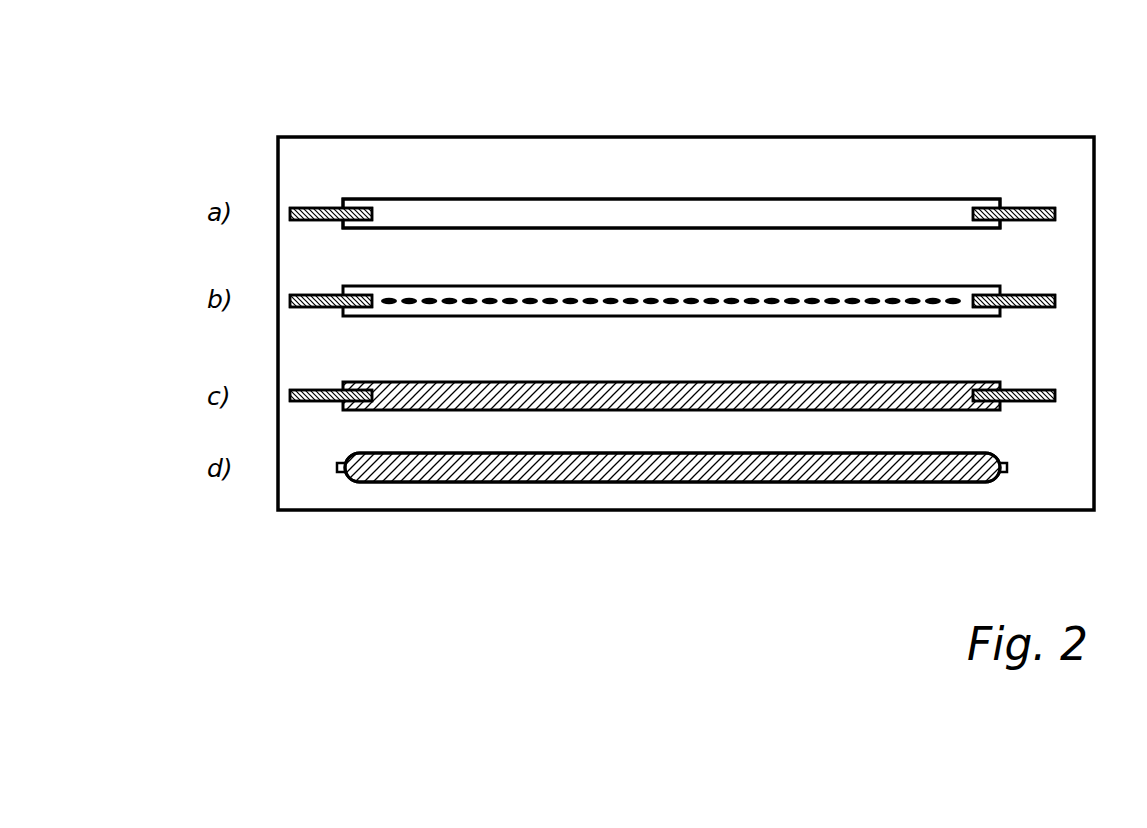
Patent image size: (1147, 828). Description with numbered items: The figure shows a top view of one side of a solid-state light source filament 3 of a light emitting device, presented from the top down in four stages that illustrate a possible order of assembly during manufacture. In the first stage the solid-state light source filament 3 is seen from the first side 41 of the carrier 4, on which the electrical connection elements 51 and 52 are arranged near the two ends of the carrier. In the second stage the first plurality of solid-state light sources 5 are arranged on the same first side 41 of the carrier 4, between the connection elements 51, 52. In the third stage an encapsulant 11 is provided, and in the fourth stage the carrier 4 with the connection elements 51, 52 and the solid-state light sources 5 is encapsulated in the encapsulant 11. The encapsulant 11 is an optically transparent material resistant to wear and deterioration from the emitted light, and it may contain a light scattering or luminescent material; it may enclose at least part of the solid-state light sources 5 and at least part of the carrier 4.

The solid-state light source filament 3 is at (738, 483).
The carrier 4 is at (511, 183).
The first side 41 is at (783, 207).
The first plurality of solid-state light sources 5 is at (954, 296).
The encapsulant 11 is at (951, 382).
The electrical connection element 51 is at (319, 208).
The electrical connection element 52 is at (1022, 206).